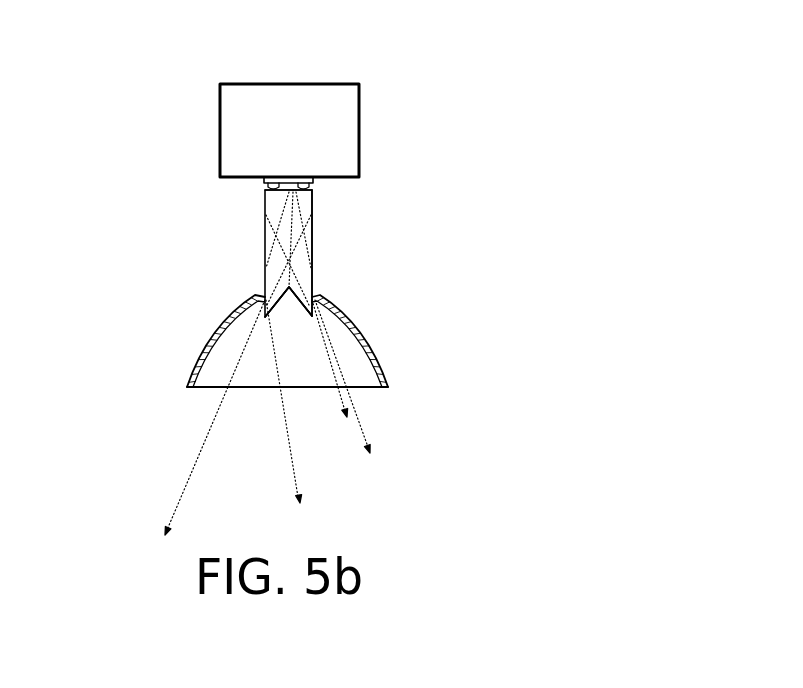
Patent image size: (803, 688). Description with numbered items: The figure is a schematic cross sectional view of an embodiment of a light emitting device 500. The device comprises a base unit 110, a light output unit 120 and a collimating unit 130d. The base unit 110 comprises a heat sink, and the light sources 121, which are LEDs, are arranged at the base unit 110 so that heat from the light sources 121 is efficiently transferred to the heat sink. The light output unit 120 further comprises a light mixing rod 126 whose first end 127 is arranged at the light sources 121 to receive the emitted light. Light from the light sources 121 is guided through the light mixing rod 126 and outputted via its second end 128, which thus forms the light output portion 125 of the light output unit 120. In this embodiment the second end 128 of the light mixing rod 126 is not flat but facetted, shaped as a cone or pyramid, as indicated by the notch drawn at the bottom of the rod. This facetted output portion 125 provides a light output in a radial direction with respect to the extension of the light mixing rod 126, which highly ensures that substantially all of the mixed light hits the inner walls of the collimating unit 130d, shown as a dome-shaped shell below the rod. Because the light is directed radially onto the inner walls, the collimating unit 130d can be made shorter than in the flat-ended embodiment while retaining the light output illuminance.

The light emitting device 500 is at (392, 60).
The base unit 110 is at (343, 122).
The light sources 121 is at (265, 190).
The light output unit 120 is at (303, 285).
The first end 127 is at (297, 191).
The light mixing rod 126 is at (315, 258).
The light output portion 125 is at (300, 300).
The second end 128 is at (395, 333).
The collimating unit 130d is at (188, 370).